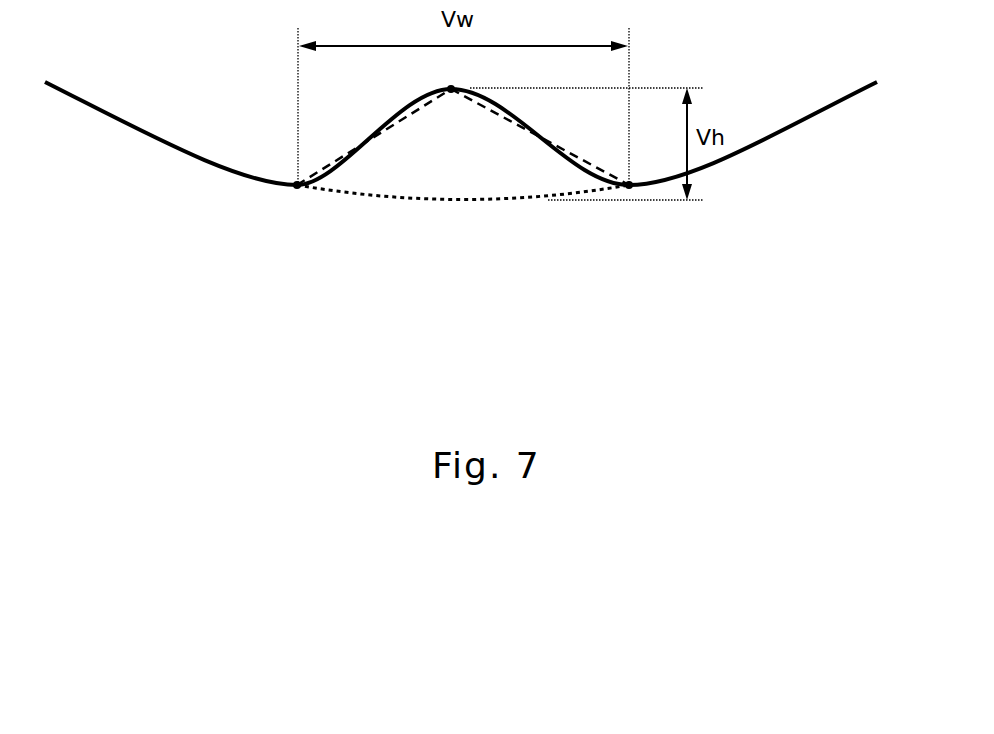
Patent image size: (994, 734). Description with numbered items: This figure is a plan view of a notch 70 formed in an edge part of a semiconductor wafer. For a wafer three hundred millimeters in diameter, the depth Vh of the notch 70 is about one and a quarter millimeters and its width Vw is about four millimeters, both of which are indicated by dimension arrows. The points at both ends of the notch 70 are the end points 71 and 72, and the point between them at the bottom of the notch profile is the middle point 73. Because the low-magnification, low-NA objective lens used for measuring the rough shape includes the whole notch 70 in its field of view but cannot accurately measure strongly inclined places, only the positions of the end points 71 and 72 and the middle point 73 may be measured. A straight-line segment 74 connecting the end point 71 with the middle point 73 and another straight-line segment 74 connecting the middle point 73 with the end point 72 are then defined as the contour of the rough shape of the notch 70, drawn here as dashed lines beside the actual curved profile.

The notch 70 is at (486, 284).
The end point 71 is at (629, 190).
The end point 72 is at (297, 190).
The middle point 73 is at (452, 94).
The straight-line segment 74 is at (571, 156).